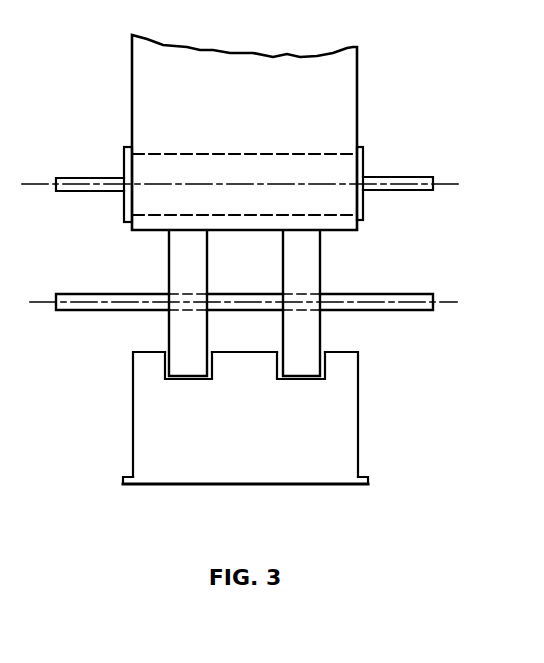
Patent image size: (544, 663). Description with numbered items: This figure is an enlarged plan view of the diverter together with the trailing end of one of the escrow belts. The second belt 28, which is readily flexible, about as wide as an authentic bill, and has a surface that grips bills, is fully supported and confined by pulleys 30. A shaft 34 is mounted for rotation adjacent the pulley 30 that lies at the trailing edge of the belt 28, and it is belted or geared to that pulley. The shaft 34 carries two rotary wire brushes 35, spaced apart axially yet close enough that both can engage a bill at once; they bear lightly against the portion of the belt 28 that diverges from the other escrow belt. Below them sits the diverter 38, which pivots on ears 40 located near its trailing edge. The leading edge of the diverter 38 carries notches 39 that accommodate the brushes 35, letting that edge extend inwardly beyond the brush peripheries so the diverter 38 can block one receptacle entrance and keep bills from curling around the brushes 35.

The second belt 28 is at (339, 231).
The pulleys 30 is at (363, 211).
The shaft 34 is at (434, 297).
The rotary wire brushes 35 is at (168, 328).
The diverter 38 is at (242, 475).
The notches 39 is at (165, 370).
The ears 40 is at (128, 485).